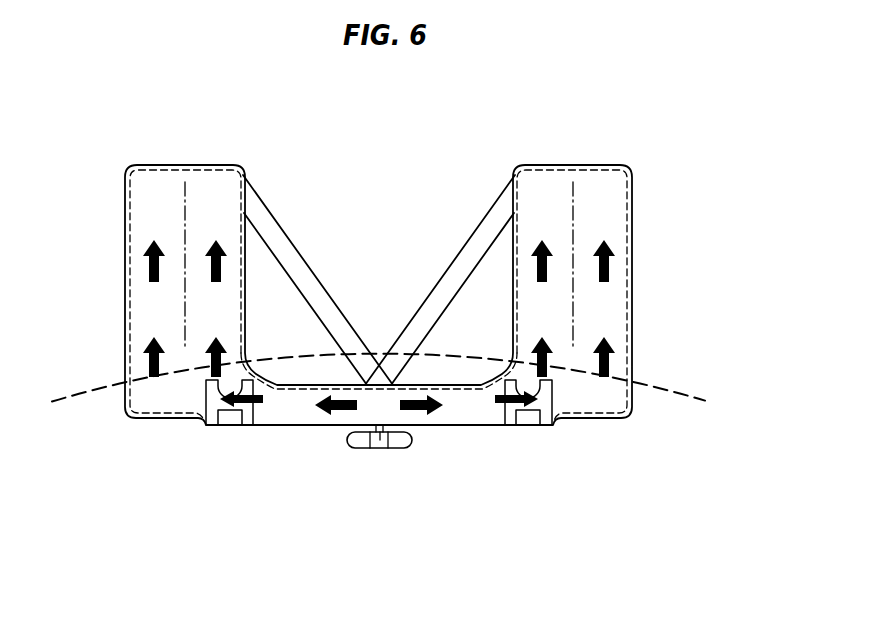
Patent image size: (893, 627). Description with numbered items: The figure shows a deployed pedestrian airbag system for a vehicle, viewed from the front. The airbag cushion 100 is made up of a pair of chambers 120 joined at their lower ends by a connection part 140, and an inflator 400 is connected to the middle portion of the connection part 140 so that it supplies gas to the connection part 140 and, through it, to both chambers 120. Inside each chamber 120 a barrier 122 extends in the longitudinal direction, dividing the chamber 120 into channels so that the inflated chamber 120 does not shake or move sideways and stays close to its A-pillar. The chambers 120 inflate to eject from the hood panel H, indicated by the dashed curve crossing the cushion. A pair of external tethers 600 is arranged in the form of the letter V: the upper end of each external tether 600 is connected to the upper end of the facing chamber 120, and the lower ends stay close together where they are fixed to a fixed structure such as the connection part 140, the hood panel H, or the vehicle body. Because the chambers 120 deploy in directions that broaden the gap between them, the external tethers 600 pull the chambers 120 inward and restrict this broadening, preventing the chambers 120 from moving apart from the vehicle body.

The airbag cushion 100 is at (253, 169).
The chamber 120 is at (590, 166).
The barrier 122 is at (574, 203).
The connection part 140 is at (462, 410).
The inflator 400 is at (380, 449).
The external tether 600 is at (302, 276).
The hood panel H is at (660, 385).